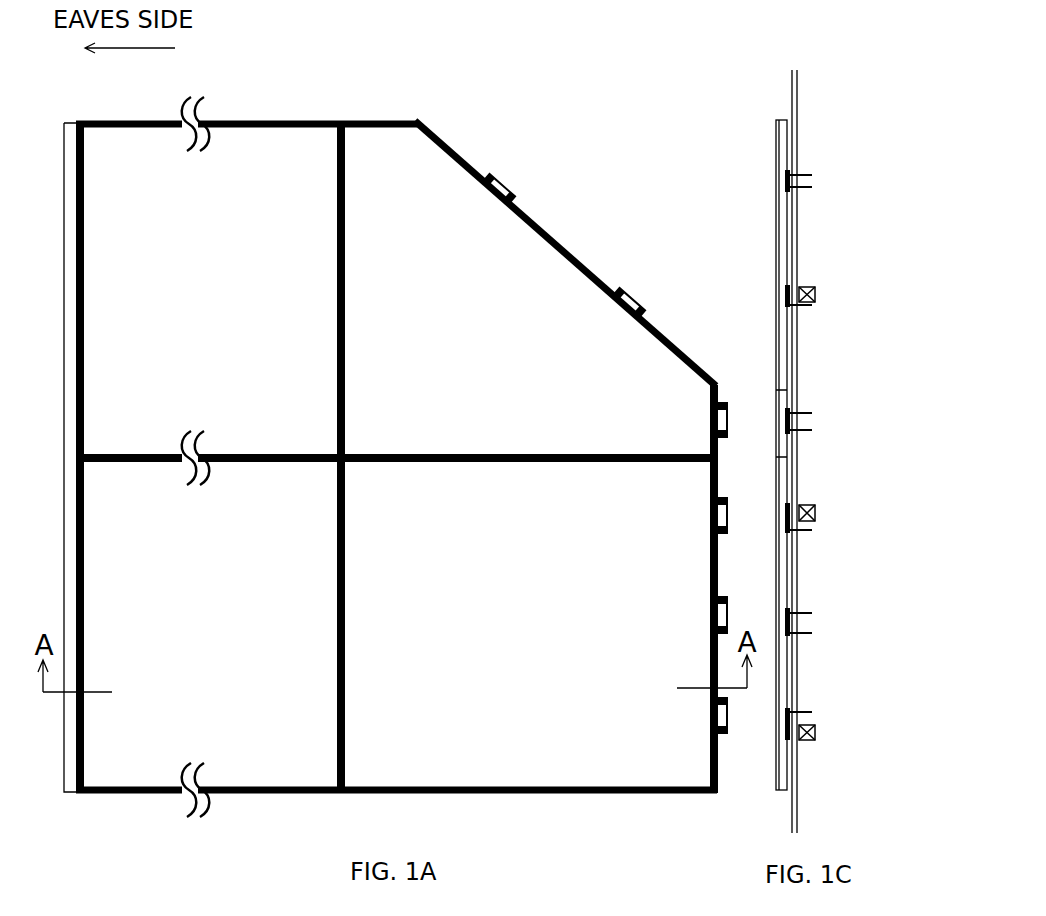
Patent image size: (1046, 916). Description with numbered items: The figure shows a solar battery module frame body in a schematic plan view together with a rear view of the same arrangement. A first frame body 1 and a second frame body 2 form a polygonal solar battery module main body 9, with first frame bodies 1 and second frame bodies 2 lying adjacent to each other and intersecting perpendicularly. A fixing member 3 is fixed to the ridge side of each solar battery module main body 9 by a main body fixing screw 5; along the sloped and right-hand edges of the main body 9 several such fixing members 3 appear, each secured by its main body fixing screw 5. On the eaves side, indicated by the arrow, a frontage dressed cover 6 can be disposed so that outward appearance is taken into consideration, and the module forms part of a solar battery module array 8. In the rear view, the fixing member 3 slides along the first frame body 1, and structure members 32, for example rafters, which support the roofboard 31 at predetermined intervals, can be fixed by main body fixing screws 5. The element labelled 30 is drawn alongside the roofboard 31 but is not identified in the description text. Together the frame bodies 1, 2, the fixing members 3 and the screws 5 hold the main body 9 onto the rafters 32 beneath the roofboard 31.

In FIG. 1A, the first frame body 1 is at (83, 276).
In FIG. 1A, the second frame body 2 is at (222, 455).
In FIG. 1A, the fixing member 3 is at (500, 187).
In FIG. 1A, the main body fixing screw 5 is at (492, 176).
In FIG. 1C, the main body fixing screw 5 is at (800, 178).
In FIG. 1A, the frontage dressed cover 6 is at (80, 228).
In FIG. 1A, the solar battery module array 8 is at (424, 66).
In FIG. 1A, the solar battery module main body 9 is at (262, 132).
In FIG. 1C, the support rail 30 is at (790, 95).
In FIG. 1C, the roofboard 31 is at (795, 120).
In FIG. 1C, the structure member 32 is at (800, 290).